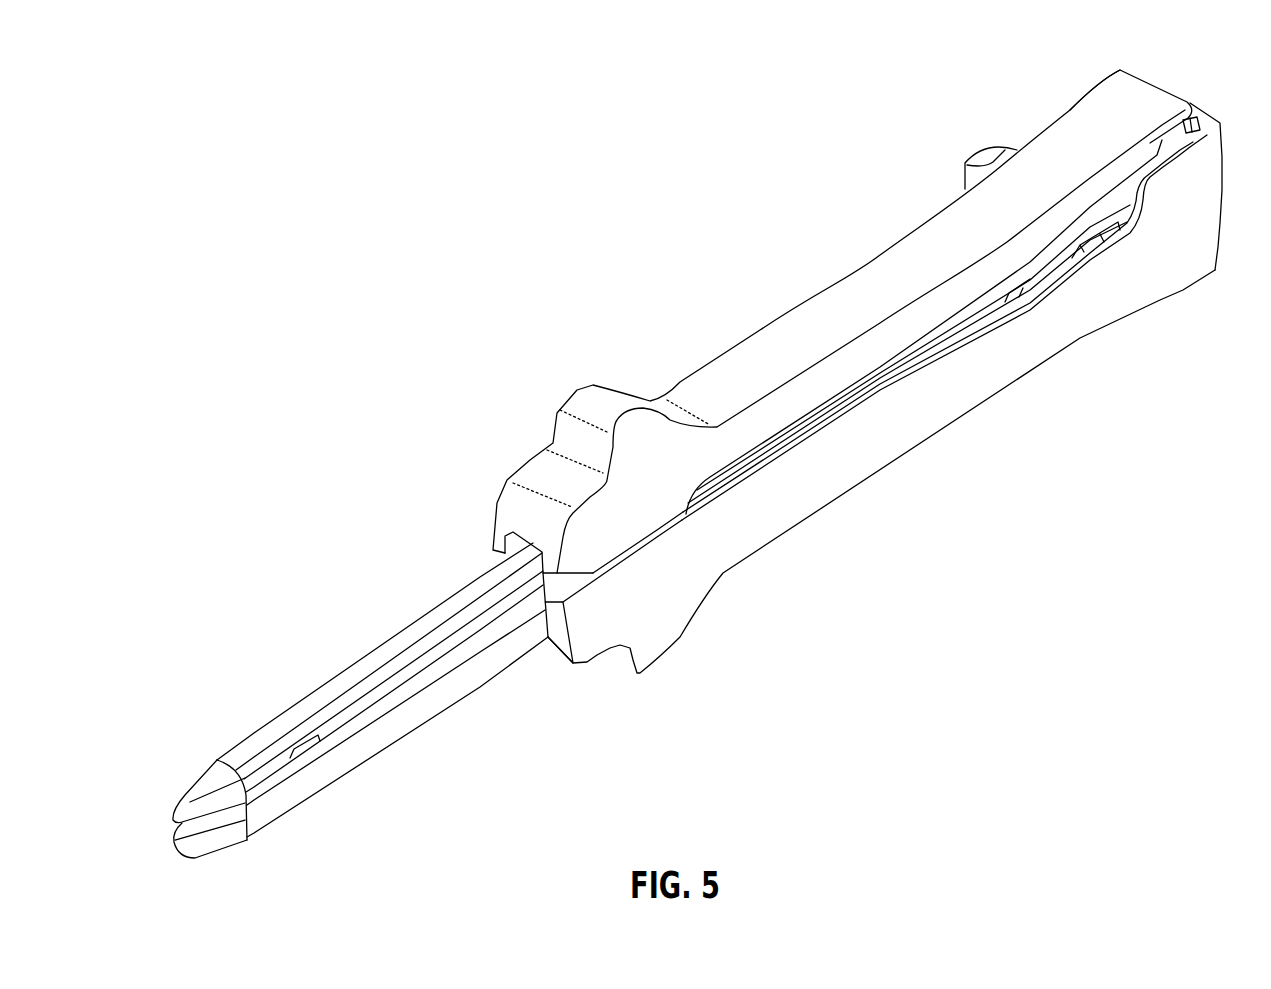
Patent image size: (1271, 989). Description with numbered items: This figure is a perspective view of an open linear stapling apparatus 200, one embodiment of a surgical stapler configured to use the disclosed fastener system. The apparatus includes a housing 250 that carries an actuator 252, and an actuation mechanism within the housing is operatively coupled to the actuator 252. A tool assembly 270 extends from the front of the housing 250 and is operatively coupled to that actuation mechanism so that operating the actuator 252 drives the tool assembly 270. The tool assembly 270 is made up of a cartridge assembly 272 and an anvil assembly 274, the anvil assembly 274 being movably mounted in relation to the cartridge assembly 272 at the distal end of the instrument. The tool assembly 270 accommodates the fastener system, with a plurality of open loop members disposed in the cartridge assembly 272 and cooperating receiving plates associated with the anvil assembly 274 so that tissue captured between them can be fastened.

The open linear stapling apparatus 200 is at (549, 259).
The housing 250 is at (827, 492).
The actuator 252 is at (1098, 117).
The tool assembly 270 is at (306, 651).
The cartridge assembly 272 is at (348, 757).
The anvil assembly 274 is at (257, 753).